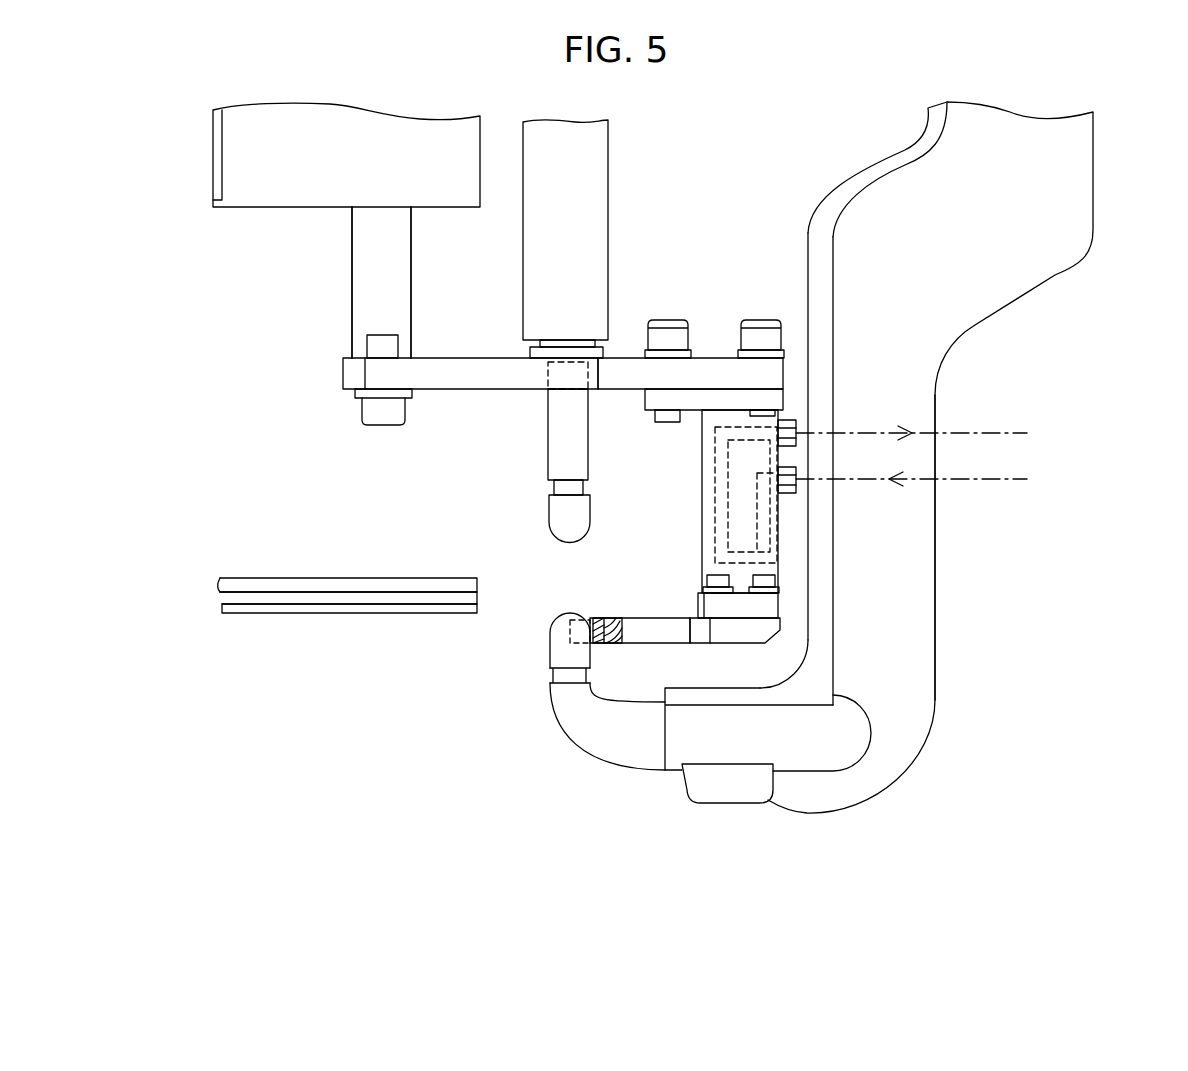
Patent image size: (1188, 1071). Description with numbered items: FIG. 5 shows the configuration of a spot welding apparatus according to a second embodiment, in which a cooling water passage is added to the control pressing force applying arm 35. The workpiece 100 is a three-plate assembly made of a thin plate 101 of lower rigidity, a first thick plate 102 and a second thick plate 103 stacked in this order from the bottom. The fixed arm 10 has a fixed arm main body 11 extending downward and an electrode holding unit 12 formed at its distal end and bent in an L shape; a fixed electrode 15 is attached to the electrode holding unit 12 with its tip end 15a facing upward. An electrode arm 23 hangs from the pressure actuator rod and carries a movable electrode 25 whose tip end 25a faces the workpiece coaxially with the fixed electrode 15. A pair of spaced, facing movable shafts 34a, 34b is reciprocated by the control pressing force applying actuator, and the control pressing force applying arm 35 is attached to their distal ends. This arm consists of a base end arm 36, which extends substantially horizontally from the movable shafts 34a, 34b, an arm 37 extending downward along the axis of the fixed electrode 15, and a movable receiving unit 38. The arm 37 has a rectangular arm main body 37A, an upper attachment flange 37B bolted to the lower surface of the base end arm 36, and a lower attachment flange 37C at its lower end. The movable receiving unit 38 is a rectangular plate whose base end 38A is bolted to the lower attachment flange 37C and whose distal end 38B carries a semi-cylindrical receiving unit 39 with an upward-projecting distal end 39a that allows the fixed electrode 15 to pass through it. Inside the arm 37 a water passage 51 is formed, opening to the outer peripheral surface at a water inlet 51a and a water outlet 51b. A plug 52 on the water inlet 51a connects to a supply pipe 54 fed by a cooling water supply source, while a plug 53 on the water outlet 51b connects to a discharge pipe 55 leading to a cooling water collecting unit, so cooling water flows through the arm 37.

The fixed arm 10 is at (1093, 200).
The fixed arm main body 11 is at (935, 392).
The electrode holding unit 12 is at (722, 750).
The fixed electrode 15 is at (560, 655).
The tip end 15a is at (548, 610).
The electrode arm 23 is at (597, 175).
The movable electrode 25 is at (555, 513).
The tip end 25a is at (572, 542).
The movable shaft 34a is at (365, 285).
The movable shaft 34b is at (381, 282).
The control pressing force applying arm 35 is at (468, 392).
The base end arm 36 is at (620, 358).
The arm 37 is at (802, 526).
The arm main body 37A is at (702, 484).
The upper attachment flange 37B is at (697, 402).
The lower attachment flange 37C is at (700, 596).
The movable receiving unit 38 is at (672, 768).
The base end 38A is at (735, 632).
The distal end 38B is at (645, 632).
The receiving unit 39 is at (620, 620).
The distal end 39a is at (600, 618).
The water passage 51 is at (770, 533).
The water inlet 51a is at (775, 500).
The water outlet 51b is at (770, 426).
The plug 52 is at (796, 486).
The plug 53 is at (796, 423).
The supply pipe 54 is at (1027, 479).
The discharge pipe 55 is at (1027, 433).
The workpiece 100 is at (293, 665).
The thin plate 101 is at (313, 610).
The first thick plate 102 is at (278, 600).
The second thick plate 103 is at (258, 588).